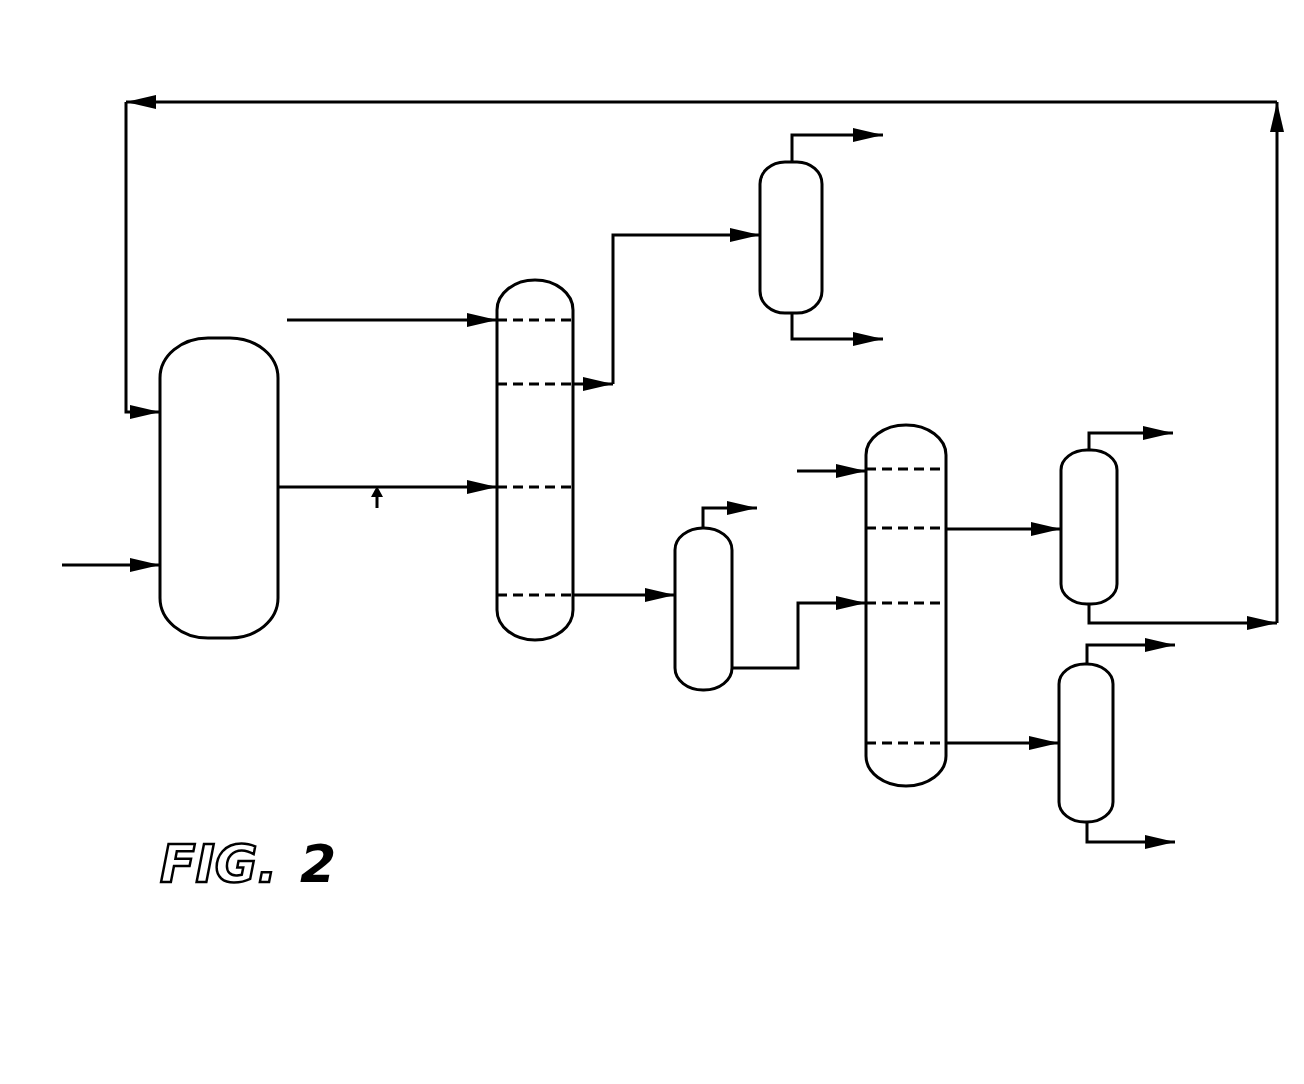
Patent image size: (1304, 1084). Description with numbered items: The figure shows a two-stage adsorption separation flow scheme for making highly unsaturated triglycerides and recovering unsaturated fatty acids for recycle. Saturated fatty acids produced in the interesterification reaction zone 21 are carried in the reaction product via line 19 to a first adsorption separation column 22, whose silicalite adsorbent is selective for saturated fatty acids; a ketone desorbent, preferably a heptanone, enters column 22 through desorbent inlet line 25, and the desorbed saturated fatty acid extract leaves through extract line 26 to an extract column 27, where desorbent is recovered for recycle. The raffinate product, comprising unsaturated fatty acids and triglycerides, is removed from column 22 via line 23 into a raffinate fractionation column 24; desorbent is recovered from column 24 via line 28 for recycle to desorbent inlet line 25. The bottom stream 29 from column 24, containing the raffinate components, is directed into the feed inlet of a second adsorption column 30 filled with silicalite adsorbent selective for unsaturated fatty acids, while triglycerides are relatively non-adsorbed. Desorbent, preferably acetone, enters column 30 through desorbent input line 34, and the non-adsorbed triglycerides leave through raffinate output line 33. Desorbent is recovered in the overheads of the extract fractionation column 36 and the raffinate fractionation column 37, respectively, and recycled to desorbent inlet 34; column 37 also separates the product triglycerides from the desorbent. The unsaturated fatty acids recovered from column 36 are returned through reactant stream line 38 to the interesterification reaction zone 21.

The fatty acid feed line to adsorption column #1 19 is at (357, 537).
The interesterification reaction zone 21 is at (248, 638).
The first adsorption separation column 22 is at (497, 523).
The raffinate line 23 is at (652, 588).
The raffinate fractionation column 24 is at (732, 572).
The desorbent inlet line 25 is at (458, 322).
The extract stream line (SFA's) 26 is at (732, 240).
The extract column 27 is at (760, 305).
The desorbent recovery line 28 is at (735, 475).
The bottom stream 29 is at (798, 620).
The second adsorption column 30 is at (861, 728).
The raffinate output line 33 is at (950, 741).
The desorbent input line 34 is at (836, 470).
The extract fractionation column 36 is at (1059, 578).
The raffinate fractionation column 37 is at (1056, 800).
The reactant stream line 38 is at (126, 252).